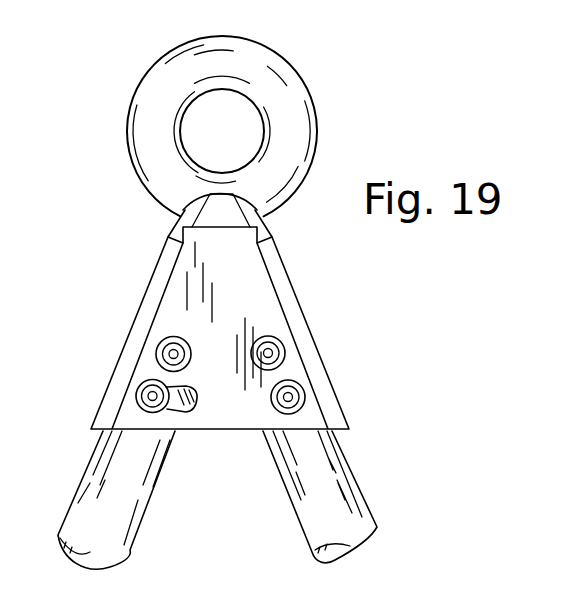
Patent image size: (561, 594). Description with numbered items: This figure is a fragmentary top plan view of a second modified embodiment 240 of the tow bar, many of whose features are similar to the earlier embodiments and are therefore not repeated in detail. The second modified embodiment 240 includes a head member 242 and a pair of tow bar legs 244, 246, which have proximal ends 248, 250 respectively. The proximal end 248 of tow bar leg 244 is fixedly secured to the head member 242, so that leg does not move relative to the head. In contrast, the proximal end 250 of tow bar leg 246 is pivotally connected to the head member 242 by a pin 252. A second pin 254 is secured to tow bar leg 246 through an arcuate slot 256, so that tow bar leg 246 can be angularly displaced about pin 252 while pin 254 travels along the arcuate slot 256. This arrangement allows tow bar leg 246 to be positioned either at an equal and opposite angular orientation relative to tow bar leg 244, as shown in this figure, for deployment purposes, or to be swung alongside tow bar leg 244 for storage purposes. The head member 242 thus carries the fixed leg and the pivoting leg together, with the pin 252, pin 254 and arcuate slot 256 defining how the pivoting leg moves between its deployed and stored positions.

The second modified embodiment of the tow bar 240 is at (317, 69).
The head member 242 is at (272, 296).
The tow bar leg 244 is at (355, 518).
The tow bar leg 246 is at (87, 485).
The proximal end 248 is at (294, 458).
The proximal end 250 is at (159, 452).
The pin 252 is at (170, 353).
The pin 254 is at (150, 395).
The arcuate slot 256 is at (186, 413).